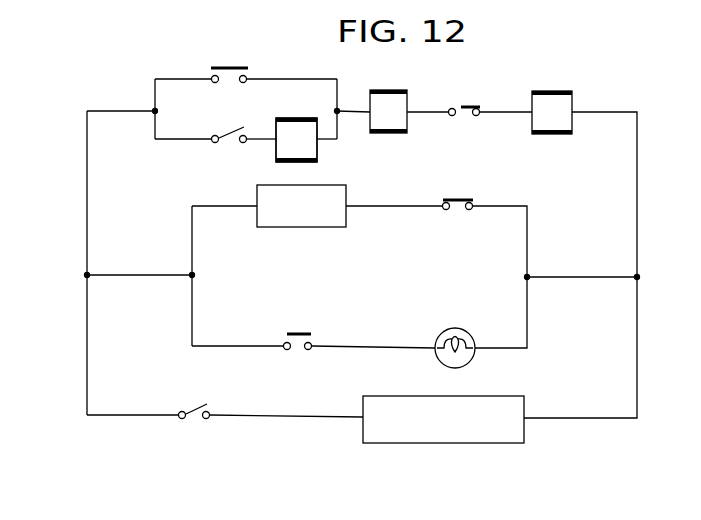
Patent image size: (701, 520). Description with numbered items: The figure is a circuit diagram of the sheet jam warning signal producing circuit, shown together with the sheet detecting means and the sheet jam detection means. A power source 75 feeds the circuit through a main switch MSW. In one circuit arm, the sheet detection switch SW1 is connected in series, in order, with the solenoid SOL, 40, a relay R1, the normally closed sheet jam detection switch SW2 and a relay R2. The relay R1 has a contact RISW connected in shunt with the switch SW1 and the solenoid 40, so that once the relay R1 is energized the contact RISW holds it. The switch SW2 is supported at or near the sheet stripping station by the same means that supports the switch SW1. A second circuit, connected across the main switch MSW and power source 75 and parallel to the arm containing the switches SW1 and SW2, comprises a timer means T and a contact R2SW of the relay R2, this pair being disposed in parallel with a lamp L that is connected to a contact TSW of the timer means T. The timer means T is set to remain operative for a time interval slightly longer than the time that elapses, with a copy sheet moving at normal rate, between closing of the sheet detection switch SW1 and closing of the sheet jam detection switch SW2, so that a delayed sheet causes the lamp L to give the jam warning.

The contact of relay R1 RISW is at (233, 64).
The sheet detection switch SW1 is at (229, 131).
The solenoid SOL is at (274, 128).
The solenoid 40 is at (317, 150).
The relay R1 is at (386, 97).
The sheet jam detection switch SW2 is at (466, 106).
The relay R2 is at (548, 98).
The timer means T is at (346, 212).
The contact of relay R2 R2SW is at (444, 199).
The contact of timer means TSW is at (283, 334).
The lamp L is at (478, 318).
The main switch MSW is at (198, 404).
The power source 75 is at (443, 443).